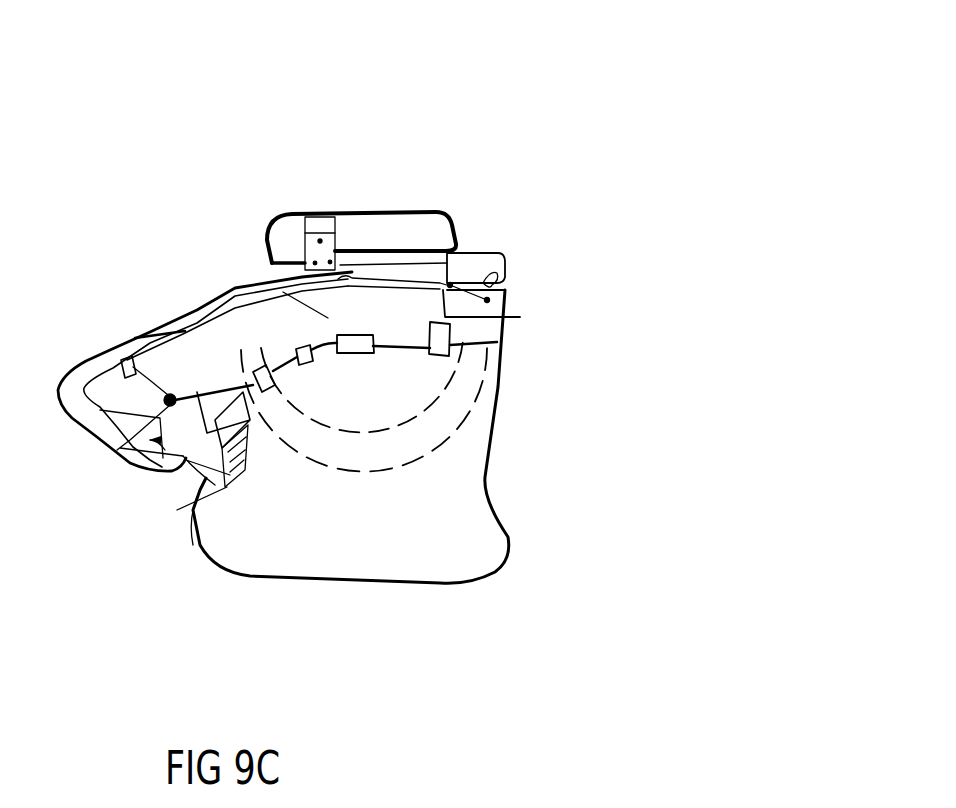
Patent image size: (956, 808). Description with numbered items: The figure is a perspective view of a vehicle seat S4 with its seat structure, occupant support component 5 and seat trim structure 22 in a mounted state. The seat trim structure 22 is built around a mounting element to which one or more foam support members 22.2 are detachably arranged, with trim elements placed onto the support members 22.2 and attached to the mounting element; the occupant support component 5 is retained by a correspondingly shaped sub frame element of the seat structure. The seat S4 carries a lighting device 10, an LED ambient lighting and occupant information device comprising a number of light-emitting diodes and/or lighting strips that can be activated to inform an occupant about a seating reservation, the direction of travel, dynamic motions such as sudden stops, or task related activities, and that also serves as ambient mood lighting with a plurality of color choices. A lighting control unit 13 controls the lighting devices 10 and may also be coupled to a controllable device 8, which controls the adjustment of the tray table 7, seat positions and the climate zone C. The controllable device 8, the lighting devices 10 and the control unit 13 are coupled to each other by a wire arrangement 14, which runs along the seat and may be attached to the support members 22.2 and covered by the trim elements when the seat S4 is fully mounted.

The vehicle seat S4 is at (130, 192).
The occupant support component 5 is at (82, 335).
The tray table device 7 is at (172, 489).
The controllable device 8 is at (153, 467).
The lighting device 10 is at (250, 317).
The lighting control unit 13 is at (521, 258).
The wire arrangement 14 is at (397, 356).
The seat trim structure 22 is at (514, 523).
The foam support member 22.2 is at (265, 255).
The climate zone C is at (455, 399).